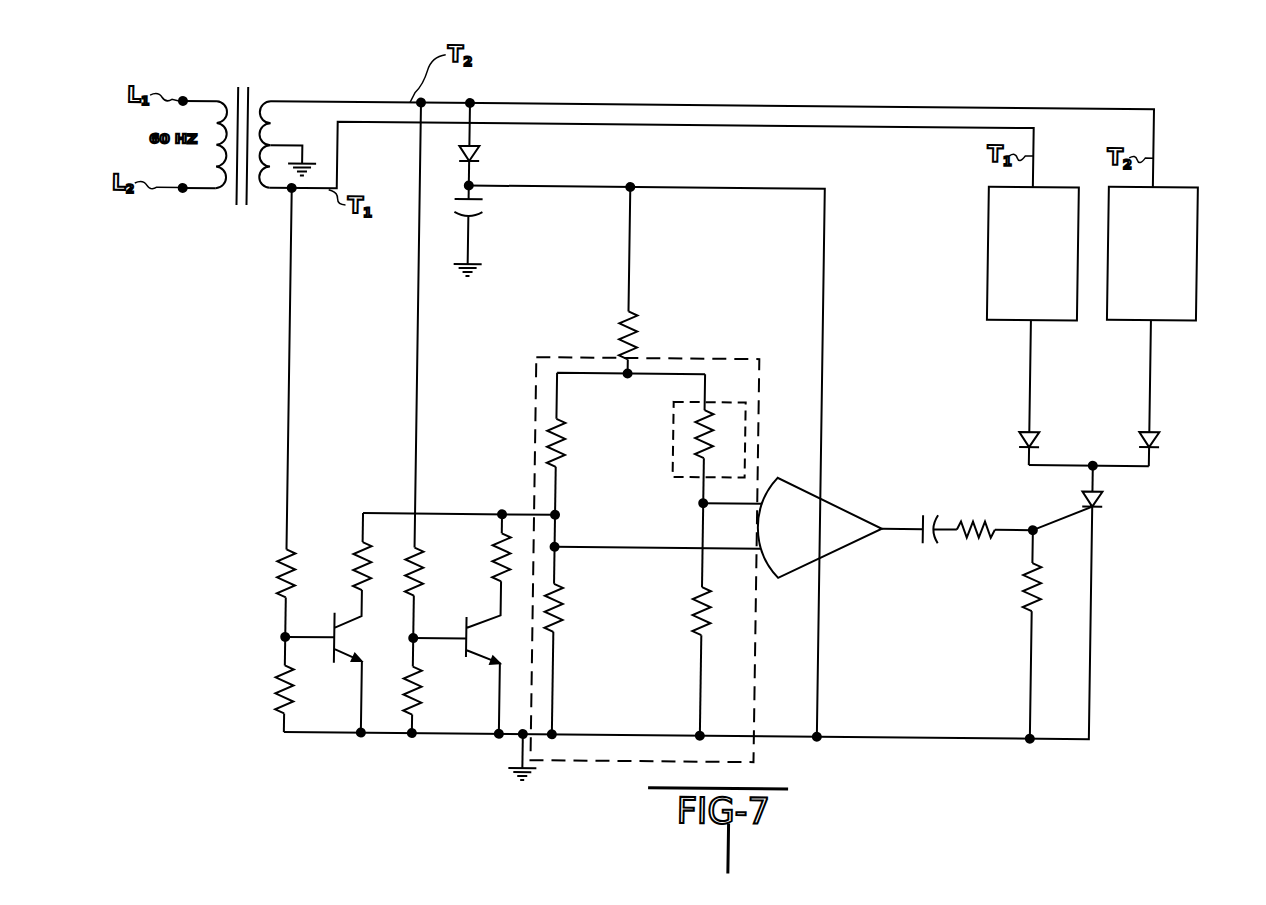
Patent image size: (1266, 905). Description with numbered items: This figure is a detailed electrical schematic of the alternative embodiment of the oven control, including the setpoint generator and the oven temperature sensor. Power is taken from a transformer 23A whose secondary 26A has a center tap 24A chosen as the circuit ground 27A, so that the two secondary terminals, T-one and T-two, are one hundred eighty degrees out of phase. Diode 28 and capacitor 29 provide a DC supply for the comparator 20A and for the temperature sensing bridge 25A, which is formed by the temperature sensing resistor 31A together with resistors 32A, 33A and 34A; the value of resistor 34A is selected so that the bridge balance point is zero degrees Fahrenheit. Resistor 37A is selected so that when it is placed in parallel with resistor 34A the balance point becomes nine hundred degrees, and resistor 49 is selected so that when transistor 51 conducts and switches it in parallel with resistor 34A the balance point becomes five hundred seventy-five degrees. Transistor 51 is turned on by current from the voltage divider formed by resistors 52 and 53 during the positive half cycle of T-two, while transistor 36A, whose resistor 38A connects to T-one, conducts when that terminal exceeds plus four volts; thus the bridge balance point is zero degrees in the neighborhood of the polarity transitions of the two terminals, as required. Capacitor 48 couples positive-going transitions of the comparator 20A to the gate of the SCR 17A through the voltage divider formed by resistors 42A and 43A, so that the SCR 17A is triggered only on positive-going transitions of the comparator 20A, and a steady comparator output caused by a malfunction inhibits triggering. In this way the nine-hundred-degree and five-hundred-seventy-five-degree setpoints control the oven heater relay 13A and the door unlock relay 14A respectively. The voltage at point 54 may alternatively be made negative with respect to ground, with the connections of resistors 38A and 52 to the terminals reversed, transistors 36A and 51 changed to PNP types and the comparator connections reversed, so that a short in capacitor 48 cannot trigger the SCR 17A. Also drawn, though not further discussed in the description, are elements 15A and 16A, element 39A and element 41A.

The oven heater relay 13A is at (990, 239).
The door unlock relay 14A is at (1199, 191).
The diode 15A is at (1024, 436).
The diode 16A is at (1166, 435).
The SCR 17A is at (1108, 486).
The comparator 20A is at (829, 494).
The transformer 23A is at (249, 91).
The center tap of secondary winding 24A is at (294, 146).
The bridge 25A is at (604, 356).
The secondary winding 26A is at (275, 99).
The ground connection 27A is at (318, 168).
The diode 28 is at (483, 161).
The capacitor 29 is at (484, 199).
The temperature sensing resistor 31A is at (677, 447).
The resistor 32A is at (705, 623).
The resistor 33A is at (550, 427).
The resistor 34A is at (568, 590).
The transistor 36A is at (349, 634).
The resistor 37A is at (369, 551).
The resistor 38A is at (282, 565).
The resistor 39A is at (287, 674).
The junction 41A is at (706, 504).
The resistor 42A is at (998, 505).
The resistor 43A is at (1032, 575).
The capacitor 48 is at (928, 531).
The resistor 49 is at (508, 572).
The transistor 51 is at (500, 625).
The resistor 52 is at (426, 561).
The resistor 53 is at (425, 674).
The point 54 is at (635, 181).